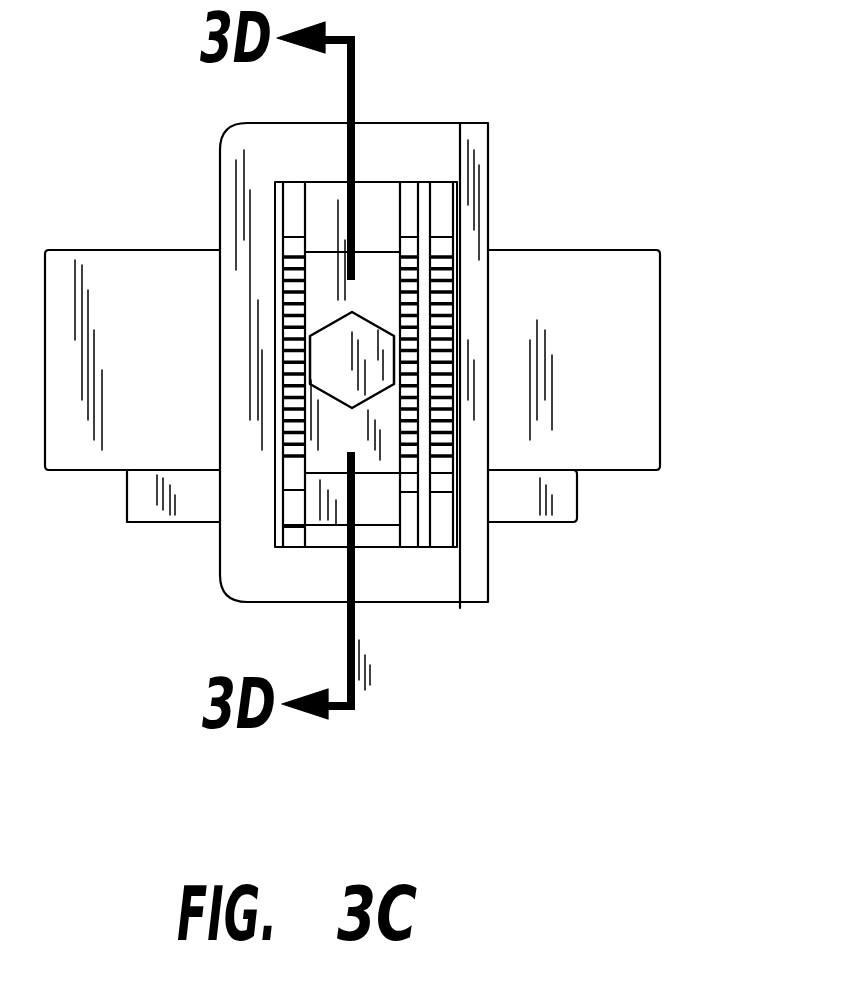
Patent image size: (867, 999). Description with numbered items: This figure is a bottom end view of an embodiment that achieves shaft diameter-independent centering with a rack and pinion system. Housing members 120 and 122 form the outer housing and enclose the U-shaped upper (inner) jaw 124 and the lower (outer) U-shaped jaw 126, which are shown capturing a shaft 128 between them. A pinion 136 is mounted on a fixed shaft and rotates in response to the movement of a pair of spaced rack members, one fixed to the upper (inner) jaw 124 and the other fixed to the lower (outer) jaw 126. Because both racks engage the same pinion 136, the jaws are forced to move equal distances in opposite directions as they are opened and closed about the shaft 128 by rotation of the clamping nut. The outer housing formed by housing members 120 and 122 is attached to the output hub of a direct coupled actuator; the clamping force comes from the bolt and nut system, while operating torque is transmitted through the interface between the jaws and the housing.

The housing member 120 is at (230, 163).
The housing member 122 is at (483, 165).
The upper (inner) jaw 124 is at (410, 533).
The lower (outer) jaw 126 is at (445, 520).
The shaft 128 is at (572, 265).
The pinion 136 is at (567, 498).